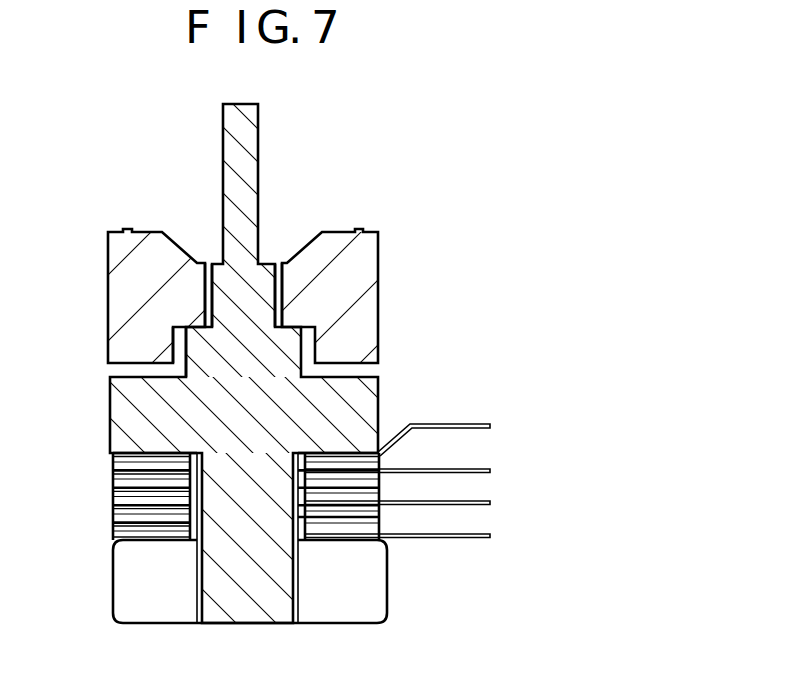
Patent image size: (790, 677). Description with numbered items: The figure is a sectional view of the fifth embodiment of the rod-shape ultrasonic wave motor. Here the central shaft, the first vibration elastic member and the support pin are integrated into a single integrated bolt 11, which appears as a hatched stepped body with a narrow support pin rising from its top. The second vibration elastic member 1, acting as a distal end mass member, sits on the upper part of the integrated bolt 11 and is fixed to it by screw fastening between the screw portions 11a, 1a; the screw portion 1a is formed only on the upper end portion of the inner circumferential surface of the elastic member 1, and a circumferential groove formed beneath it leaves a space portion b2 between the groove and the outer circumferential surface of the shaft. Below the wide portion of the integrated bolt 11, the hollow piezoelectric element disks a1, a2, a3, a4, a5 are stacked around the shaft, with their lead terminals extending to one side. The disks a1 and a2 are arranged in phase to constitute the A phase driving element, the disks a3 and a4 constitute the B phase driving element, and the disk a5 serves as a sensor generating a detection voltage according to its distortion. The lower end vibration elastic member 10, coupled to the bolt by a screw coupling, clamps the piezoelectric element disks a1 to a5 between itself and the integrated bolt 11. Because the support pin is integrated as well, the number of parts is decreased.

The second vibration elastic member 1 is at (362, 337).
The integrated bolt 11 is at (368, 395).
The screw portion 11a is at (285, 285).
The screw portion 1a is at (303, 251).
The space portion b2 is at (178, 349).
The lower end vibration elastic member 10 is at (367, 582).
The piezoelectric element disk a1 is at (112, 462).
The piezoelectric element disk a2 is at (112, 478).
The piezoelectric element disk a3 is at (112, 500).
The piezoelectric element disk a4 is at (112, 515).
The piezoelectric element disk a5 is at (112, 530).